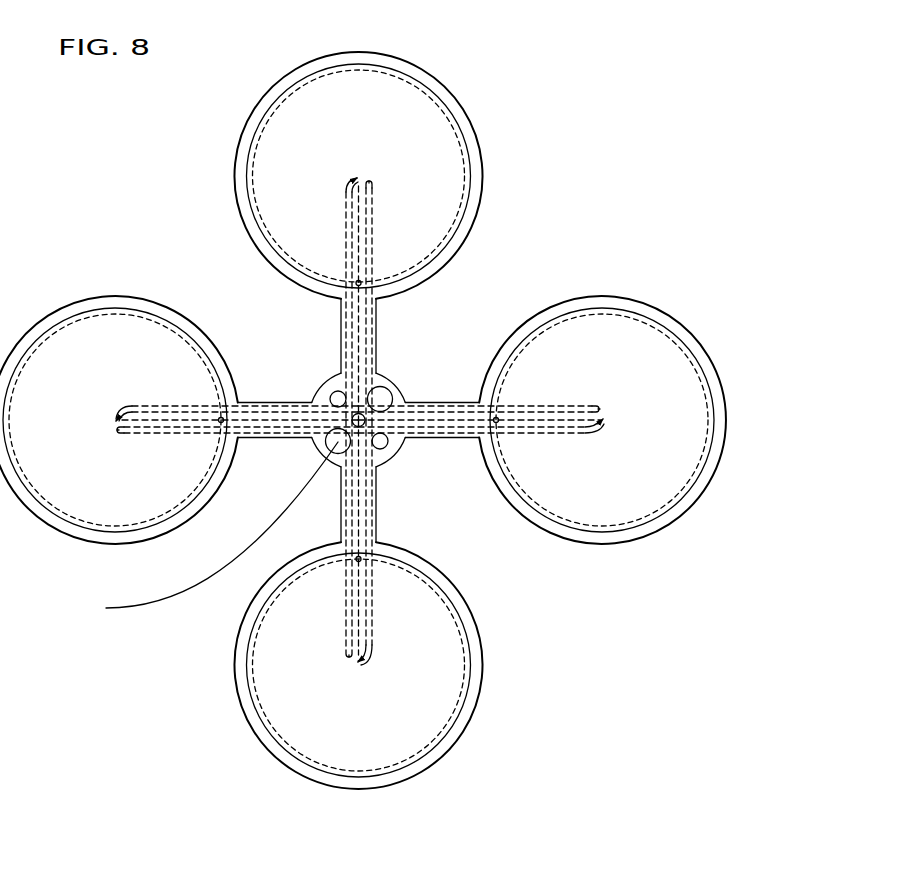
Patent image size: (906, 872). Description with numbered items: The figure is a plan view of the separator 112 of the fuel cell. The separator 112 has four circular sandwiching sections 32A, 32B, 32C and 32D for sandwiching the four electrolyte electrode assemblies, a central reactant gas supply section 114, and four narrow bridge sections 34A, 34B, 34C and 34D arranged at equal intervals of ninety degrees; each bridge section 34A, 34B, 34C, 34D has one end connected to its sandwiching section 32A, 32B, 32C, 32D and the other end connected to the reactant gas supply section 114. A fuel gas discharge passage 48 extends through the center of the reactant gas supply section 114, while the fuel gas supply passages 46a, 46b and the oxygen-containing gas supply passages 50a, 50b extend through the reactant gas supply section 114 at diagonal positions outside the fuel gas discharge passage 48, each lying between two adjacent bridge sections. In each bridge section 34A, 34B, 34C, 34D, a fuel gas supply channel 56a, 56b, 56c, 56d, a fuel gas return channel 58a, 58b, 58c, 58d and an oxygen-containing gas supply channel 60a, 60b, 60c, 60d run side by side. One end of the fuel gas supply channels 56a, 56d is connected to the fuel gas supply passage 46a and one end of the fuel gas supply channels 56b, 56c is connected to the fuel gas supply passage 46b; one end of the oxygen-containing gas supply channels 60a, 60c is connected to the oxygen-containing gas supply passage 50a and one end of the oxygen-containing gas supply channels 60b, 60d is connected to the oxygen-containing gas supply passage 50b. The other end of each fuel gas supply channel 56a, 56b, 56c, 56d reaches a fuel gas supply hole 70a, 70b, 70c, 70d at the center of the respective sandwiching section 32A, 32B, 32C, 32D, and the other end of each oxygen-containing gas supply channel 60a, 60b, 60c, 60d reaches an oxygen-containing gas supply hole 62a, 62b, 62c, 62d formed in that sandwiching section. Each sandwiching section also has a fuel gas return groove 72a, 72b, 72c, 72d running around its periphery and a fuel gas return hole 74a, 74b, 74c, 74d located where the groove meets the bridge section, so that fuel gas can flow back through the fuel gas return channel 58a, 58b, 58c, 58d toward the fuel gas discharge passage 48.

The separator 112 is at (144, 124).
The reactant gas supply section 114 is at (458, 311).
The sandwiching section 32A is at (597, 546).
The sandwiching section 32B is at (130, 296).
The sandwiching section 32C is at (236, 186).
The sandwiching section 32D is at (483, 654).
The bridge section 34A is at (446, 439).
The bridge section 34B is at (271, 401).
The bridge section 34C is at (341, 346).
The bridge section 34D is at (379, 510).
The fuel gas supply passage 46a is at (382, 446).
The fuel gas supply passage 46b is at (339, 398).
The fuel gas discharge passage 48 is at (175, 548).
The oxygen-containing gas supply passage 50a is at (381, 397).
The oxygen-containing gas supply passage 50b is at (334, 456).
The fuel gas supply channel 56a is at (565, 434).
The fuel gas supply channel 56b is at (152, 404).
The fuel gas supply channel 56c is at (347, 212).
The fuel gas supply channel 56d is at (372, 630).
The fuel gas return channel 58a is at (462, 402).
The fuel gas return channel 58b is at (255, 438).
The fuel gas return channel 58c is at (377, 313).
The fuel gas return channel 58d is at (341, 523).
The oxygen-containing gas supply channel 60a is at (560, 407).
The oxygen-containing gas supply channel 60b is at (158, 434).
The oxygen-containing gas supply channel 60c is at (373, 218).
The oxygen-containing gas supply channel 60d is at (345, 620).
The oxygen-containing gas supply hole 62a is at (598, 406).
The oxygen-containing gas supply hole 62b is at (118, 434).
The oxygen-containing gas supply hole 62c is at (375, 182).
The oxygen-containing gas supply hole 62d is at (347, 656).
The fuel gas supply hole 70a is at (604, 421).
The fuel gas supply hole 70b is at (115, 420).
The fuel gas supply hole 70c is at (355, 177).
The fuel gas supply hole 70d is at (359, 663).
The fuel gas return groove 72a is at (569, 308).
The fuel gas return groove 72b is at (150, 541).
The fuel gas return groove 72c is at (466, 205).
The fuel gas return groove 72d is at (253, 632).
The fuel gas return hole 74a is at (497, 422).
The fuel gas return hole 74b is at (222, 418).
The fuel gas return hole 74c is at (358, 281).
The fuel gas return hole 74d is at (359, 561).